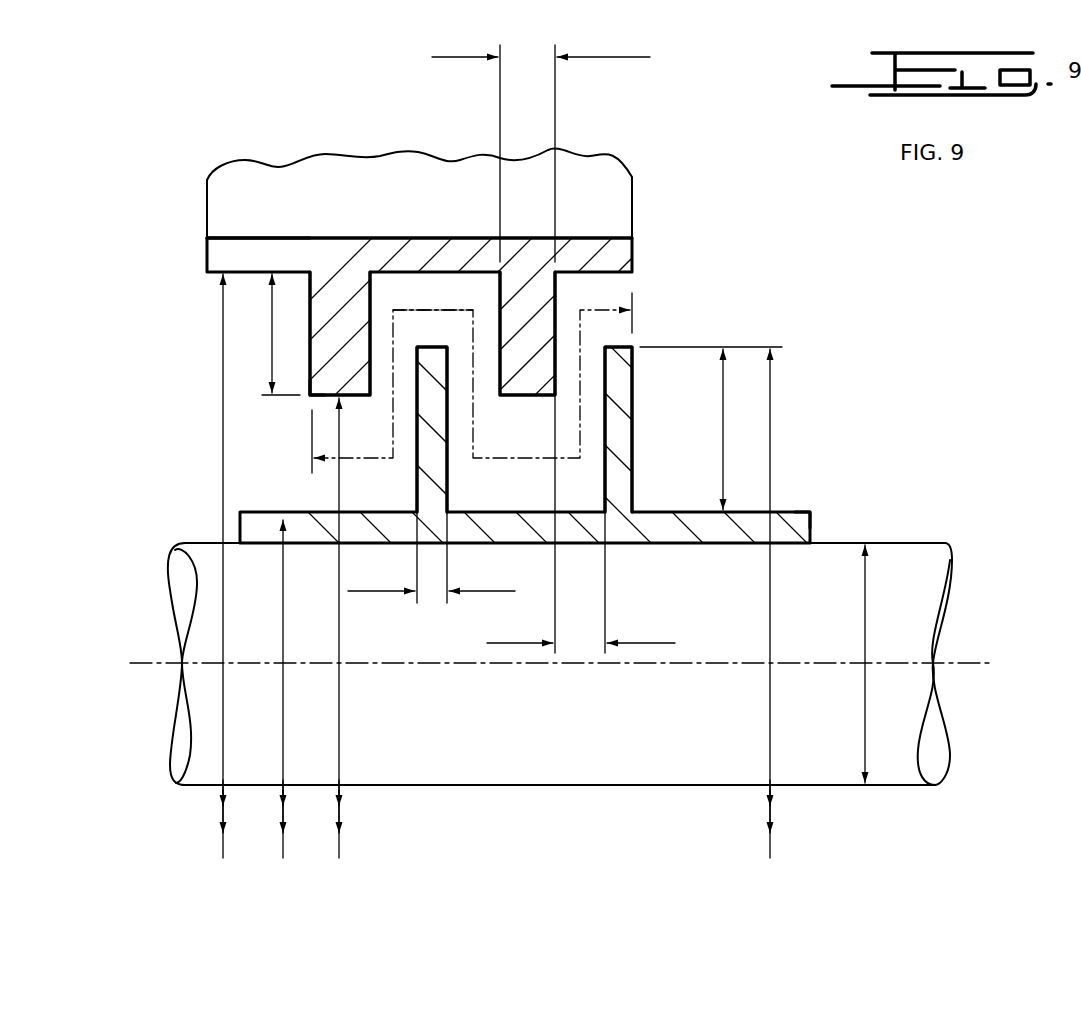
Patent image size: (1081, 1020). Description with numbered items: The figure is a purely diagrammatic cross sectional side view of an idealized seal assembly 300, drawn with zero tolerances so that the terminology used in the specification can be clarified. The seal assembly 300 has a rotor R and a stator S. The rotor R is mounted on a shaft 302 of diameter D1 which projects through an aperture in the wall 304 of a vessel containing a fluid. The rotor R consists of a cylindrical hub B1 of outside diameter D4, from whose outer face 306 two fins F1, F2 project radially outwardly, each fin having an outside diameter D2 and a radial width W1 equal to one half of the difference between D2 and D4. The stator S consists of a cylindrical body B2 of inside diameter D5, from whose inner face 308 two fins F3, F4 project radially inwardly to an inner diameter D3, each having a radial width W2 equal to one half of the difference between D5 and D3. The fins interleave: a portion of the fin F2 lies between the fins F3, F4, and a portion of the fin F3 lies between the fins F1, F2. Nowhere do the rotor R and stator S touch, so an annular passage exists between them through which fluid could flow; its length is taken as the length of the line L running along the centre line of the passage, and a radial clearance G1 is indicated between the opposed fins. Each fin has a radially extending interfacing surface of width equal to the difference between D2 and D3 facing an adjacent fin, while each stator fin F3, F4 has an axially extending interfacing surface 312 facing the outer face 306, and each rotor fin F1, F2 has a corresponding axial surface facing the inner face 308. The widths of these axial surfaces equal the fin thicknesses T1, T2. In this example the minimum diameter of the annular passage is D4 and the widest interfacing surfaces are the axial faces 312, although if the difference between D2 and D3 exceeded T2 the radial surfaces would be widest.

The seal assembly 300 is at (690, 185).
The shaft 302 is at (920, 618).
The wall 304 is at (228, 206).
The outer face 306 is at (798, 510).
The inner face 308 is at (628, 276).
The axially extending interfacing surface 312 is at (317, 403).
The stator S is at (588, 243).
The line L is at (428, 307).
The rotor R is at (790, 530).
The cylindrical hub B1 is at (307, 512).
The cylindrical body B2 is at (257, 162).
The fin F1 is at (617, 488).
The fin F2 is at (428, 492).
The fin F3 is at (520, 297).
The fin F4 is at (343, 297).
The radial width W1 is at (723, 458).
The radial width W2 is at (272, 360).
The fin thickness T1 is at (431, 557).
The fin thickness T2 is at (543, 145).
The radial gap G1 is at (581, 524).
The shaft diameter D1 is at (865, 730).
The fin outside diameter D2 is at (772, 456).
The stator fin inside diameter D3 is at (339, 733).
The hub outside diameter D4 is at (283, 733).
The body inside diameter D5 is at (223, 470).